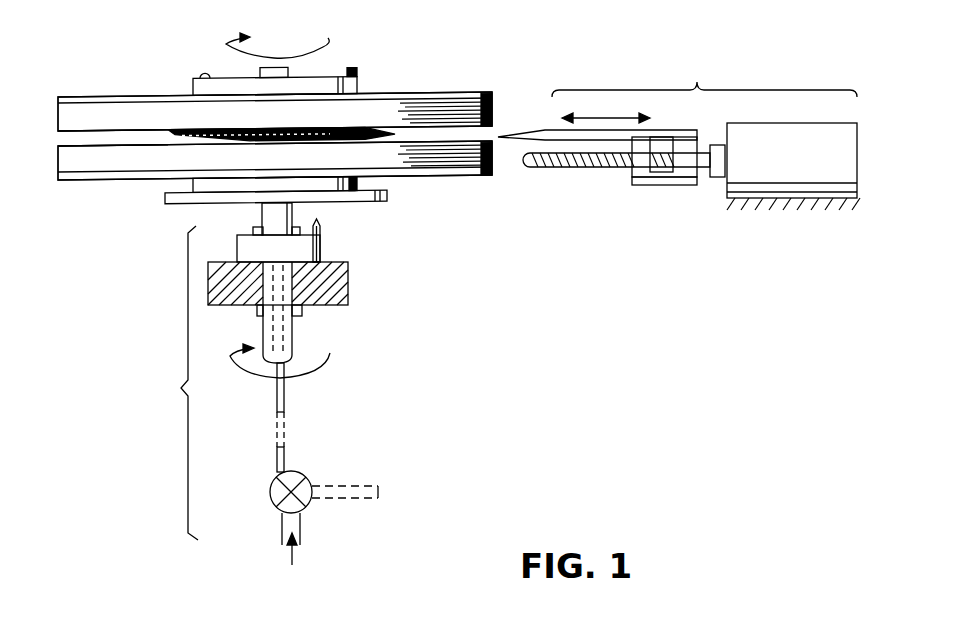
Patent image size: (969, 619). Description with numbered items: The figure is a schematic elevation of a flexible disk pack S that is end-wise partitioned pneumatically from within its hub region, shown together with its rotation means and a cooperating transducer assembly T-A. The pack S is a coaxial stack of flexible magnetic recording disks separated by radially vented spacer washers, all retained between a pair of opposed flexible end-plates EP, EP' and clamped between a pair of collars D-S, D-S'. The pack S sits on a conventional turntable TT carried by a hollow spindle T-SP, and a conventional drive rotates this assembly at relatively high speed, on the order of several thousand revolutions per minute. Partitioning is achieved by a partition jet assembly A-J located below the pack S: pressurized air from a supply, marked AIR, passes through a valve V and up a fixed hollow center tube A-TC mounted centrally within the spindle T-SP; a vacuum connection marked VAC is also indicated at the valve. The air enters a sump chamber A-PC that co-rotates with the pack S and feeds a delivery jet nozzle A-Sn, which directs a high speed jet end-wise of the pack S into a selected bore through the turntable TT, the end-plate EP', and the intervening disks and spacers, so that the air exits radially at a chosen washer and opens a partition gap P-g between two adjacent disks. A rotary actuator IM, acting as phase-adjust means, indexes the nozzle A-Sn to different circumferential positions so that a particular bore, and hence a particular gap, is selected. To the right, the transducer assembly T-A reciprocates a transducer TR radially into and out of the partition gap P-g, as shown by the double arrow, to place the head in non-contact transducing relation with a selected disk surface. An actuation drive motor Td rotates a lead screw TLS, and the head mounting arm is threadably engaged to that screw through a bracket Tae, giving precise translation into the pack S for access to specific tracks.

The flexible disk pack S is at (131, 93).
The flexible end-plate EP is at (263, 93).
The flexible end-plate EP' is at (269, 184).
The partition gap P-g is at (74, 140).
The collar D-S is at (252, 66).
The collar D-S' is at (239, 207).
The spindle T-SP is at (290, 73).
The turntable TT is at (390, 199).
The delivery jet nozzle A-Sn is at (322, 224).
The sump chamber A-PC is at (322, 250).
The rotary actuator IM is at (350, 290).
The partition jet assembly A-J is at (162, 383).
The hollow center tube A-TC is at (286, 400).
The valve V is at (271, 496).
The vacuum line VAC is at (482, 492).
The air supply line AIR is at (290, 552).
The transducer TR is at (522, 137).
The transducer assembly T-A is at (704, 88).
The lead screw TLS is at (598, 168).
The bracket Tae is at (662, 186).
The actuation drive motor Td is at (790, 176).